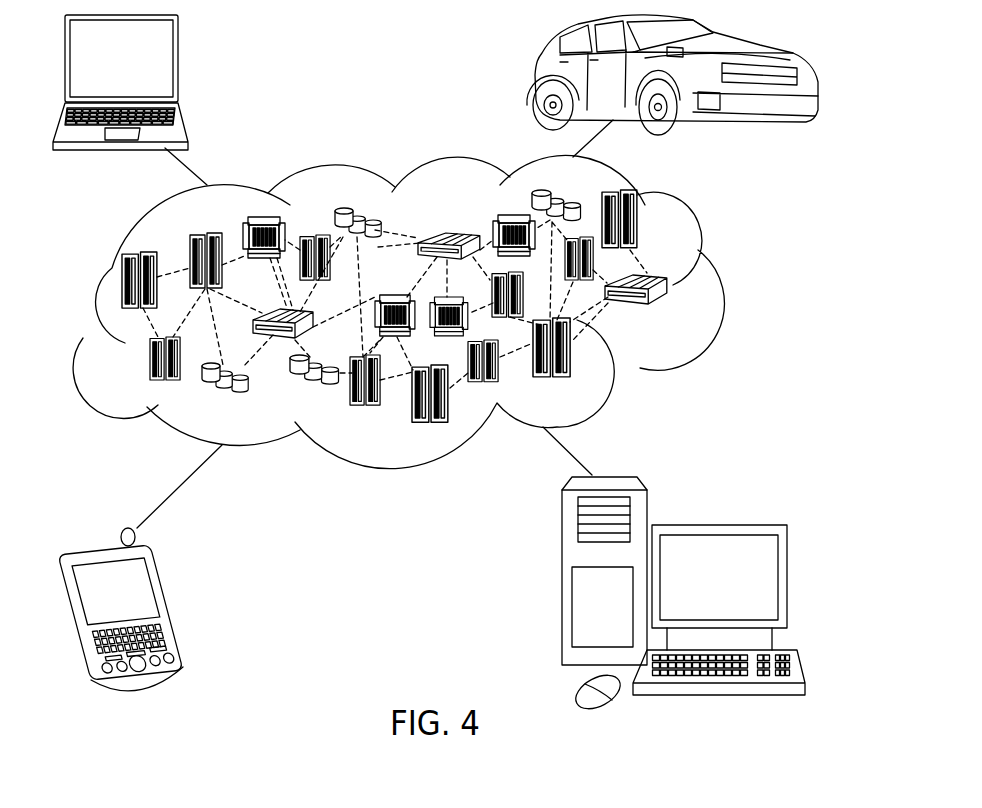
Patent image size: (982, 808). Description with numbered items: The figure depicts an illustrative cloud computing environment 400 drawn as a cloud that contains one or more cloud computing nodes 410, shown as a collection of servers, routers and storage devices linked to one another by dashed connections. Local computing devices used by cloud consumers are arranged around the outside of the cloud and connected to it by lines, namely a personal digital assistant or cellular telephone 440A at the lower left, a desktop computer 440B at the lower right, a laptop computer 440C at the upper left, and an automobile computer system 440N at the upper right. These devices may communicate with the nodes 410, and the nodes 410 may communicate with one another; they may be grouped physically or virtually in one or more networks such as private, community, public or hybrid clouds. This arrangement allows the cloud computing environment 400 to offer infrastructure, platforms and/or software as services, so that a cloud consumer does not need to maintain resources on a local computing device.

The cloud computing environment 400 is at (718, 285).
The cloud computing nodes 410 is at (672, 315).
The personal digital assistant (PDA) or cellular telephone 440A is at (172, 605).
The desktop computer 440B is at (717, 525).
The laptop computer 440C is at (178, 62).
The automobile computer system 440N is at (540, 78).